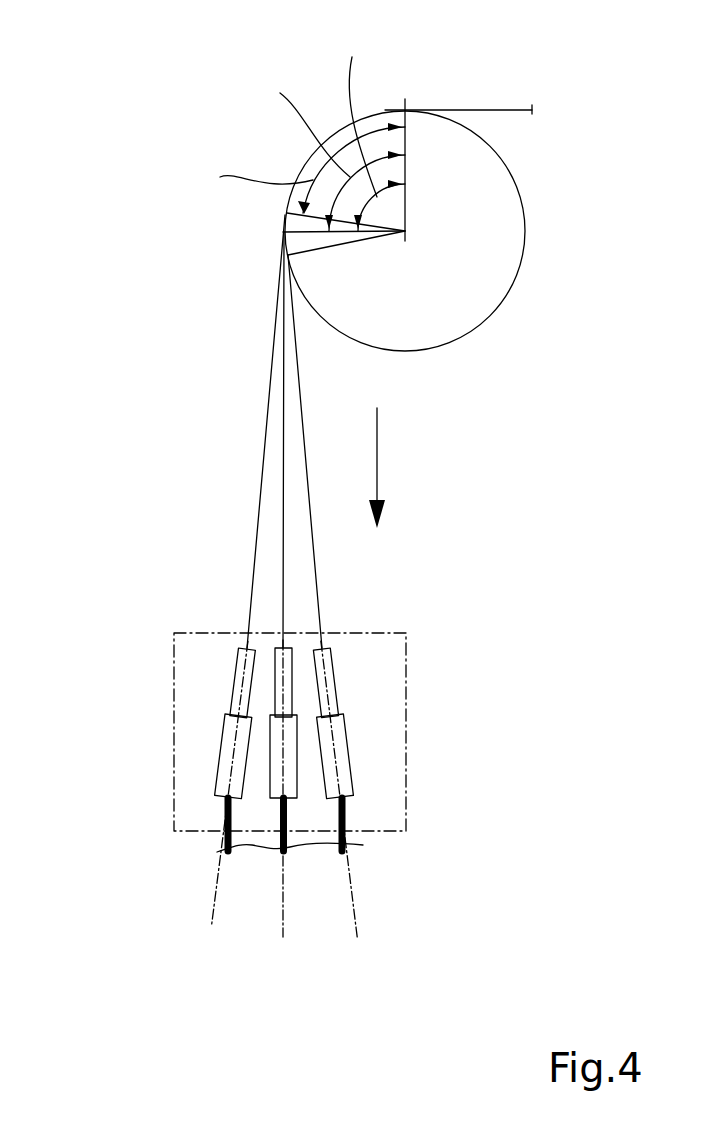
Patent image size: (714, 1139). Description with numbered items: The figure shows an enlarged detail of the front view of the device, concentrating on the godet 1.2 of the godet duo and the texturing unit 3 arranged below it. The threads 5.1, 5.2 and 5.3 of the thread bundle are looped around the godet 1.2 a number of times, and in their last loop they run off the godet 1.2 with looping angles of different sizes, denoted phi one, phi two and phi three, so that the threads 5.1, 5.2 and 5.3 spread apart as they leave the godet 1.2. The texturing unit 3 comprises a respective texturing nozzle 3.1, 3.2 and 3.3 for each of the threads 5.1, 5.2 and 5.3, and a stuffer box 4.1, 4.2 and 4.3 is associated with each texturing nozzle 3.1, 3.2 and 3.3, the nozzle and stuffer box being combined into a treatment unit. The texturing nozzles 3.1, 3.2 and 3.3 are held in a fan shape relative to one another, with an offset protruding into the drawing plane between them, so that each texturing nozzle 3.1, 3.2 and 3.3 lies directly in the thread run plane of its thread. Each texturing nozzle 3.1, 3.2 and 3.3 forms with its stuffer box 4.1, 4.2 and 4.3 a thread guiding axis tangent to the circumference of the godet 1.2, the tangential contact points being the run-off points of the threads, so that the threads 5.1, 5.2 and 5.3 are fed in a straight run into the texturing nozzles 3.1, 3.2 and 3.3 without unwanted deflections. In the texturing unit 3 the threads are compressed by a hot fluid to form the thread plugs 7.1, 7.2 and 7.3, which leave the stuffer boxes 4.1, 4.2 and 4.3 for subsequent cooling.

The godet 1.2 is at (448, 303).
The texturing unit 3 is at (397, 633).
The texturing nozzle 3.1 is at (243, 663).
The texturing nozzle 3.2 is at (280, 668).
The texturing nozzle 3.3 is at (332, 658).
The stuffer box 4.1 is at (242, 737).
The stuffer box 4.2 is at (278, 760).
The stuffer box 4.3 is at (347, 742).
The thread 5.1 is at (265, 433).
The thread 5.2 is at (282, 397).
The thread 5.3 is at (295, 377).
The thread plug 7.1 is at (227, 827).
The thread plug 7.2 is at (287, 838).
The thread plug 7.3 is at (347, 828).